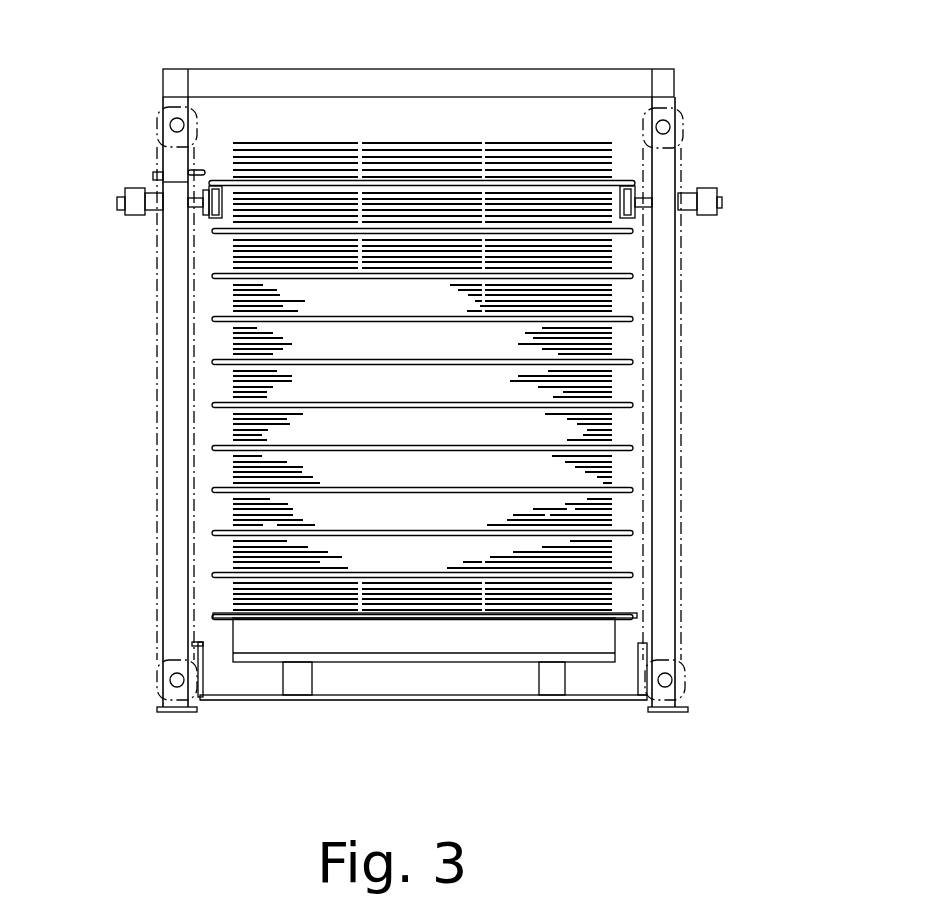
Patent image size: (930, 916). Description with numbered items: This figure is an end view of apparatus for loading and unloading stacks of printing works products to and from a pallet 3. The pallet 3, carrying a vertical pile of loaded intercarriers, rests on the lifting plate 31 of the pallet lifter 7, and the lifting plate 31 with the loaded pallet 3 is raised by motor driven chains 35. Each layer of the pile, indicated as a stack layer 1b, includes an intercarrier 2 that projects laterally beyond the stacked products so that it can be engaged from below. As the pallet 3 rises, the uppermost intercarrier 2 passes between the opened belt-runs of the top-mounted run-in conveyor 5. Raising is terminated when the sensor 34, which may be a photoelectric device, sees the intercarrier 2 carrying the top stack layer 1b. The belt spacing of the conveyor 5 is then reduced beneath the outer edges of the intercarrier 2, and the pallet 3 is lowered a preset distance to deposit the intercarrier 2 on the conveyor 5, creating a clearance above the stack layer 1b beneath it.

The stack layer 1b is at (395, 128).
The intercarrier 2 is at (622, 186).
The run-in conveyor 5 is at (625, 229).
The sensor 34 is at (160, 176).
The motor driven chains 35 is at (681, 499).
The lifting plate 31 is at (360, 700).
The pallet 3 is at (447, 642).
The pallet lifter 7 is at (515, 708).